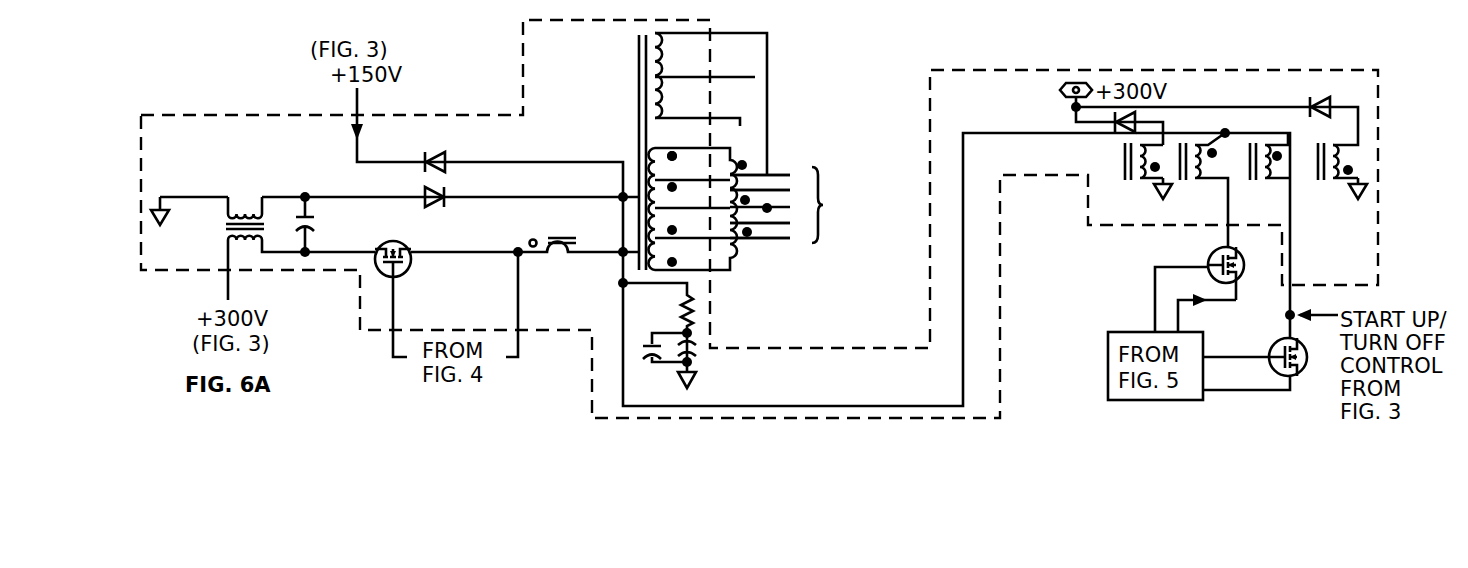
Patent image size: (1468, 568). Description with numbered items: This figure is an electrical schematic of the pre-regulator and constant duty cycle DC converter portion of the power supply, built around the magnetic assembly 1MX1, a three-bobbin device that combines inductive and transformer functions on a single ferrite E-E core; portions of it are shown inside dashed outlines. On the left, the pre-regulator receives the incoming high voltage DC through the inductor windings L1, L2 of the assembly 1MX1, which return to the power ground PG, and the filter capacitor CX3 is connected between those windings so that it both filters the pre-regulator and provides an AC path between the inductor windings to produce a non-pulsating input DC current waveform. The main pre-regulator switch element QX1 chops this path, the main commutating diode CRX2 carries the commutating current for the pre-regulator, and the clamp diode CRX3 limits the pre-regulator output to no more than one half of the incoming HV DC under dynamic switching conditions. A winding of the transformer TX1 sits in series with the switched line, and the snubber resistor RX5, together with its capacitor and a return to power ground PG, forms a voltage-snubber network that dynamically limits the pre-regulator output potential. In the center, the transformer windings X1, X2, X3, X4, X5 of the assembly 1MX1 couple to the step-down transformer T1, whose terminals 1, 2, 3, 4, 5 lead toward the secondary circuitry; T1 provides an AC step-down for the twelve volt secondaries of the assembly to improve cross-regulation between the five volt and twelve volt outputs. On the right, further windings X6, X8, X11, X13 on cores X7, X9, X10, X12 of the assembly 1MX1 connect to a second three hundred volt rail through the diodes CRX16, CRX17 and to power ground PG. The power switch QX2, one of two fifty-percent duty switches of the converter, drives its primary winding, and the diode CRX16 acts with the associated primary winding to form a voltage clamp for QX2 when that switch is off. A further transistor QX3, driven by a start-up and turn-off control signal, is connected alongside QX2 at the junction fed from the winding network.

The magnetic assembly 1MX1 is at (1400, 140).
The clamp diode CRX3 is at (433, 151).
The main commutating diode CRX2 is at (448, 214).
The power ground PG is at (762, 290).
The inductor L2 is at (245, 203).
The inductor L1 is at (301, 268).
The filter capacitor CX3 is at (328, 224).
The main pre-regulator switch element QX1 is at (412, 262).
The transformer TX1 winding 1T (partial) TX1 is at (576, 254).
The snubber resistor RX5 is at (659, 325).
The step-down transformer T1 is at (775, 164).
The winding X1 is at (683, 139).
The winding X2 is at (689, 163).
The winding X3 is at (689, 192).
The winding X4 is at (689, 222).
The winding X5 is at (689, 260).
The transformer terminal 1 is at (786, 165).
The transformer terminal 2 is at (797, 175).
The transformer terminal 3 is at (798, 190).
The transformer terminal 4 is at (795, 223).
The transformer terminal 5 is at (794, 238).
The voltage clamp diode CRX16 is at (1098, 132).
The diode CRX17 is at (1323, 98).
The winding X11 is at (1119, 161).
The core X10 is at (1125, 198).
The winding X6 is at (1220, 140).
The core X7 is at (1209, 198).
The winding X8 is at (1285, 137).
The core X9 is at (1269, 199).
The winding X13 is at (1331, 152).
The core X12 is at (1327, 201).
The power switch QX2 is at (1215, 282).
The transistor QX3 is at (1300, 373).